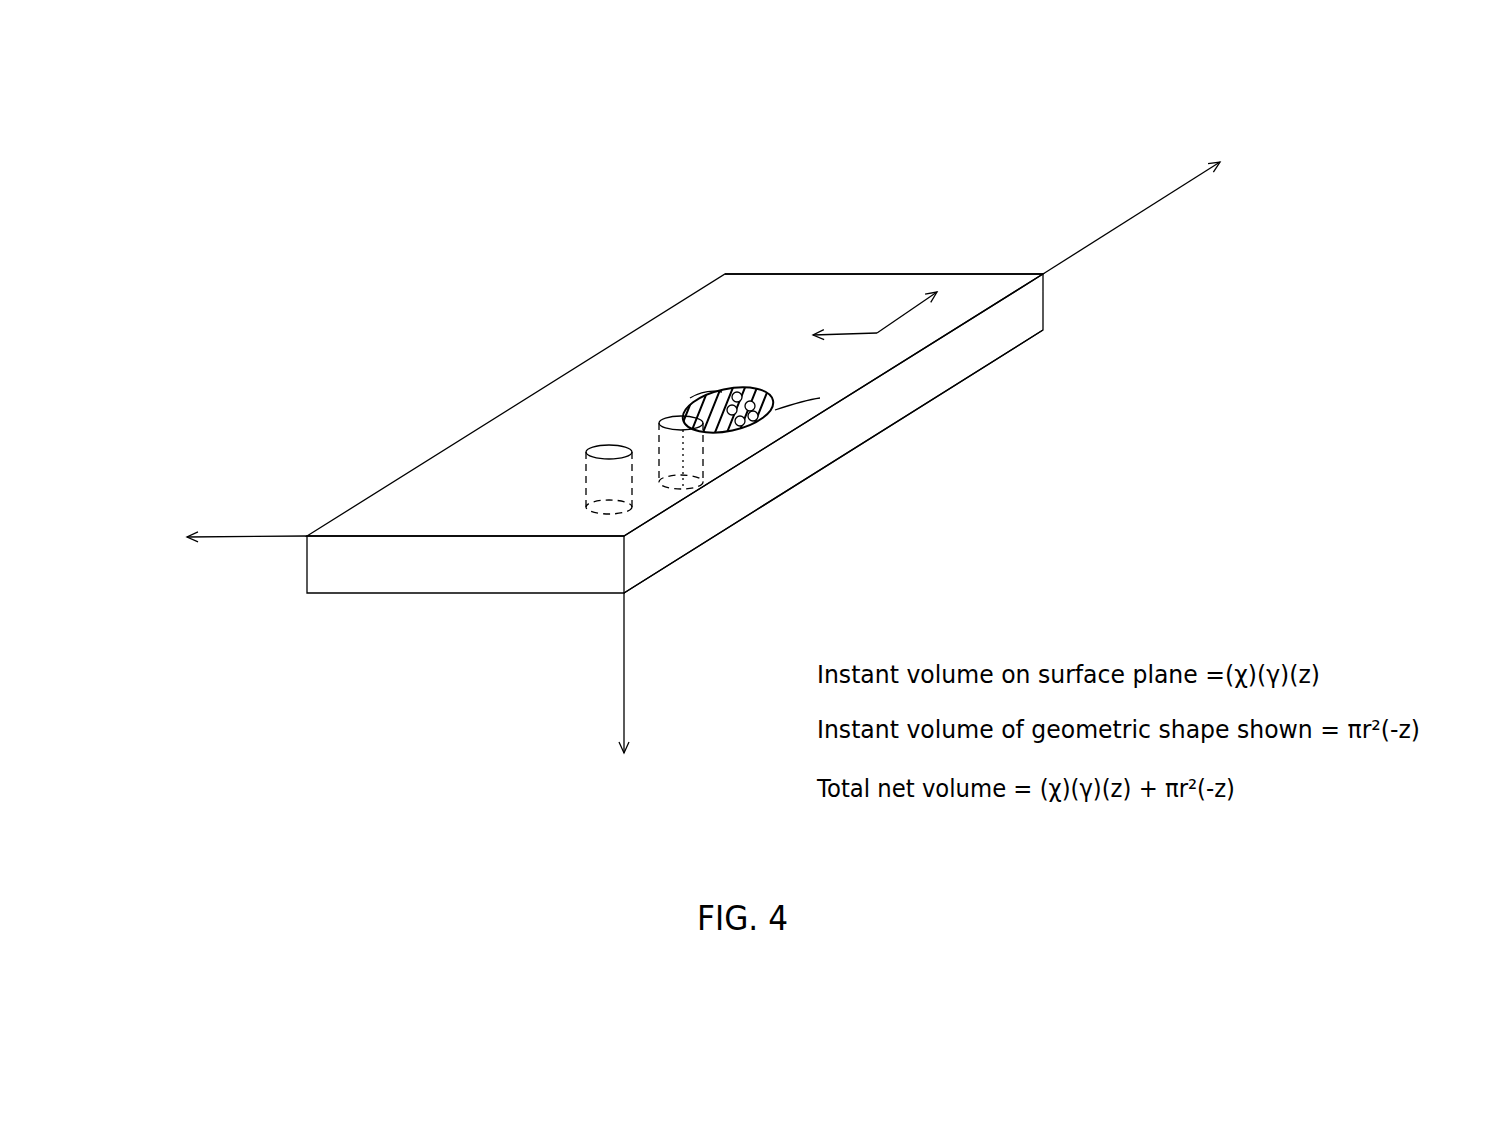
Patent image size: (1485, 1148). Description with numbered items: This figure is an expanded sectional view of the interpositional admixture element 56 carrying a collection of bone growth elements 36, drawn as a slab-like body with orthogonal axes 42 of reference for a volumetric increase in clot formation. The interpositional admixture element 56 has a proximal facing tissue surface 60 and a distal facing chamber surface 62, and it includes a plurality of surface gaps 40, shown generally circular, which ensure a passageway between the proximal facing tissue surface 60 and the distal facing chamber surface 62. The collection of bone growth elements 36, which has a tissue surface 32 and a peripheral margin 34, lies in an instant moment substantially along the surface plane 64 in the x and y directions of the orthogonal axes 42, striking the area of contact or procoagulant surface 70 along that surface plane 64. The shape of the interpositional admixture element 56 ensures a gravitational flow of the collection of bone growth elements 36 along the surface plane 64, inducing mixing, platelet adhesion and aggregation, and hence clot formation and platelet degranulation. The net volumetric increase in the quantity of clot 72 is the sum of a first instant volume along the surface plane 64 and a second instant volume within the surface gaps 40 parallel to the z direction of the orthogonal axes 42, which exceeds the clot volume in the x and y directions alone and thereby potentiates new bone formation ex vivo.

The proximal facing tissue surface 60 is at (462, 330).
The distal facing chamber surface 62 is at (472, 645).
The interpositional admixture element 56 is at (953, 399).
The procoagulant surface 70 is at (807, 388).
The orthogonal axes 42 is at (215, 528).
The surface plane 64 is at (877, 333).
The surface gaps 40 is at (655, 418).
The tissue surface 32 is at (772, 402).
The peripheral margin 34 is at (740, 387).
The collection of bone growth elements 36 is at (715, 412).
The quantity of clot 72 is at (775, 410).